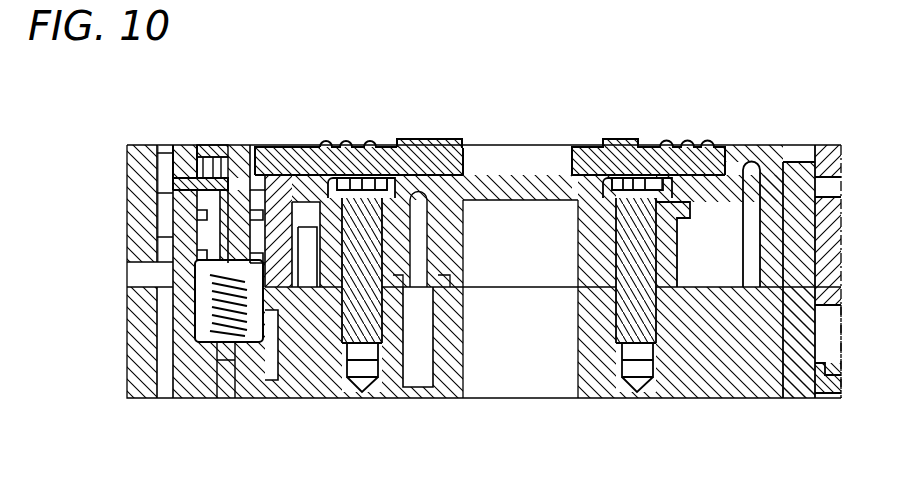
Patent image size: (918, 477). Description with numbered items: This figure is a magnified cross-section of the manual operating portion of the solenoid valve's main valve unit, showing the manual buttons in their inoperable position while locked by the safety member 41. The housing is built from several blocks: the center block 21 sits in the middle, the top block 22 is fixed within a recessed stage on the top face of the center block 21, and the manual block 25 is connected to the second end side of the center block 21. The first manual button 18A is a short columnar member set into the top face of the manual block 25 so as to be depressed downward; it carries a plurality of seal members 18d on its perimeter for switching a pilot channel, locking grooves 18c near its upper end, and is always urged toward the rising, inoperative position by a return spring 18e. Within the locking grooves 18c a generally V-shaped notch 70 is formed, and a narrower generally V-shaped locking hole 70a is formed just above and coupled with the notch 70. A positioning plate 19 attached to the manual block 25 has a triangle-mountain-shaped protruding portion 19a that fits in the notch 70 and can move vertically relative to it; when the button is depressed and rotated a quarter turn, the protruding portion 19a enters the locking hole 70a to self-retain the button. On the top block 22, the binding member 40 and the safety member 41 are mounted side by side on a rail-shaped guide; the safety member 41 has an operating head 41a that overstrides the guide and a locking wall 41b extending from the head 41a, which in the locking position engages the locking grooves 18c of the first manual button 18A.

The first manual button 18A is at (252, 150).
The locking grooves 18c is at (190, 157).
The seal members 18d is at (197, 302).
The return spring 18e is at (232, 352).
The positioning plate 19 is at (158, 182).
The protruding portion 19a is at (195, 215).
The center block 21 is at (738, 386).
The top block 22 is at (772, 147).
The manual block 25 is at (147, 398).
The binding member 40 is at (607, 145).
The safety member 41 is at (365, 126).
The head 41a is at (390, 146).
The locking wall 41b is at (310, 146).
The notch 70 is at (202, 157).
The locking hole 70a is at (222, 160).